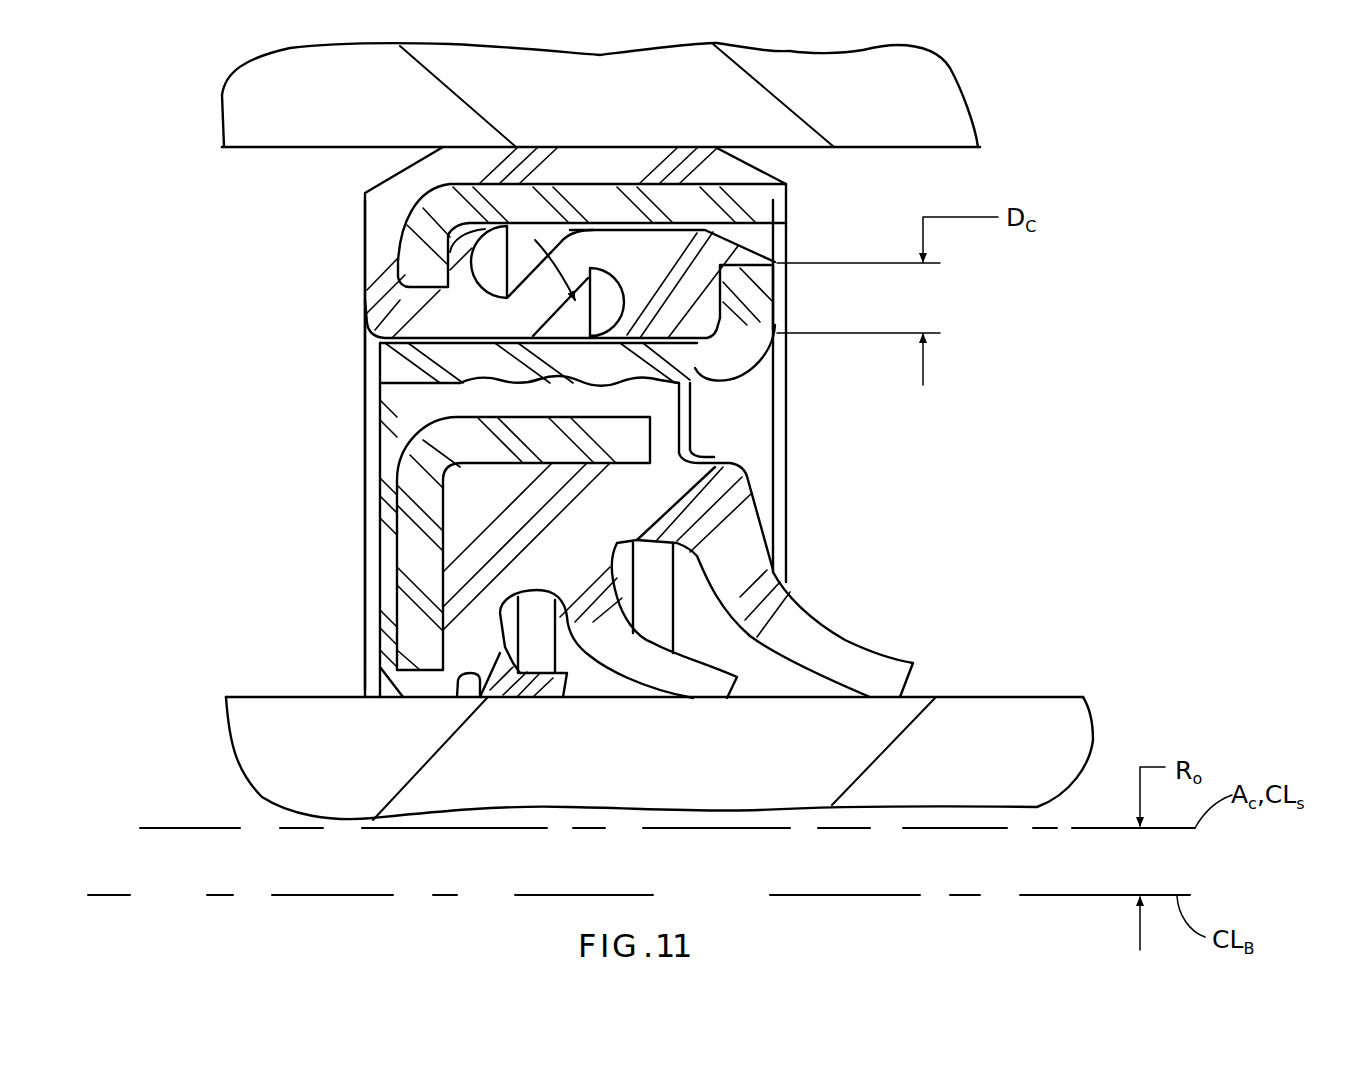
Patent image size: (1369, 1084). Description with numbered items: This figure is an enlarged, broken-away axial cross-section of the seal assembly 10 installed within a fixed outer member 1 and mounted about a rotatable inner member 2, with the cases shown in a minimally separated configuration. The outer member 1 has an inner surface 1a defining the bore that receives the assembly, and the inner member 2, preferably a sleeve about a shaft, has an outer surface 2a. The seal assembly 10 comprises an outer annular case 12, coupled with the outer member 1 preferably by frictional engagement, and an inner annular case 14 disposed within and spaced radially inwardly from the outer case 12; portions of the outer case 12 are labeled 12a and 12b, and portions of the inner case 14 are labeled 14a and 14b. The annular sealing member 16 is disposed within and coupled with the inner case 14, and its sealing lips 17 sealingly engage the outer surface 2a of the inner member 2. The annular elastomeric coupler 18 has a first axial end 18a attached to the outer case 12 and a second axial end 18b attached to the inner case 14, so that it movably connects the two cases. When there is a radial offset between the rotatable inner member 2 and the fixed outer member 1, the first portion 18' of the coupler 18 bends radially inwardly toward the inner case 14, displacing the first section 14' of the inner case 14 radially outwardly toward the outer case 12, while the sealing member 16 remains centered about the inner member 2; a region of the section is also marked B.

The outer member 1 is at (222, 122).
The inner surface 1a is at (247, 148).
The inner member 2 is at (1038, 720).
The outer surface 2a is at (973, 697).
The seal assembly 10 is at (990, 447).
The outer annular case 12 is at (300, 233).
The housing side wall 12a is at (372, 262).
The housing outer wall 12b is at (790, 203).
The inner annular case 14 is at (644, 335).
The seal body upper band 14a is at (380, 362).
The seal body cup portion 14b is at (780, 298).
The first section of the inner case 14' is at (767, 476).
The annular sealing member 16 is at (888, 562).
The sealing lips 17 is at (855, 638).
The annular elastomeric coupler 18 is at (641, 233).
The first portion of the elastomeric coupler 18' is at (580, 218).
The first axial end 18a is at (460, 383).
The second axial end 18b is at (700, 316).
The bearing region B is at (252, 398).